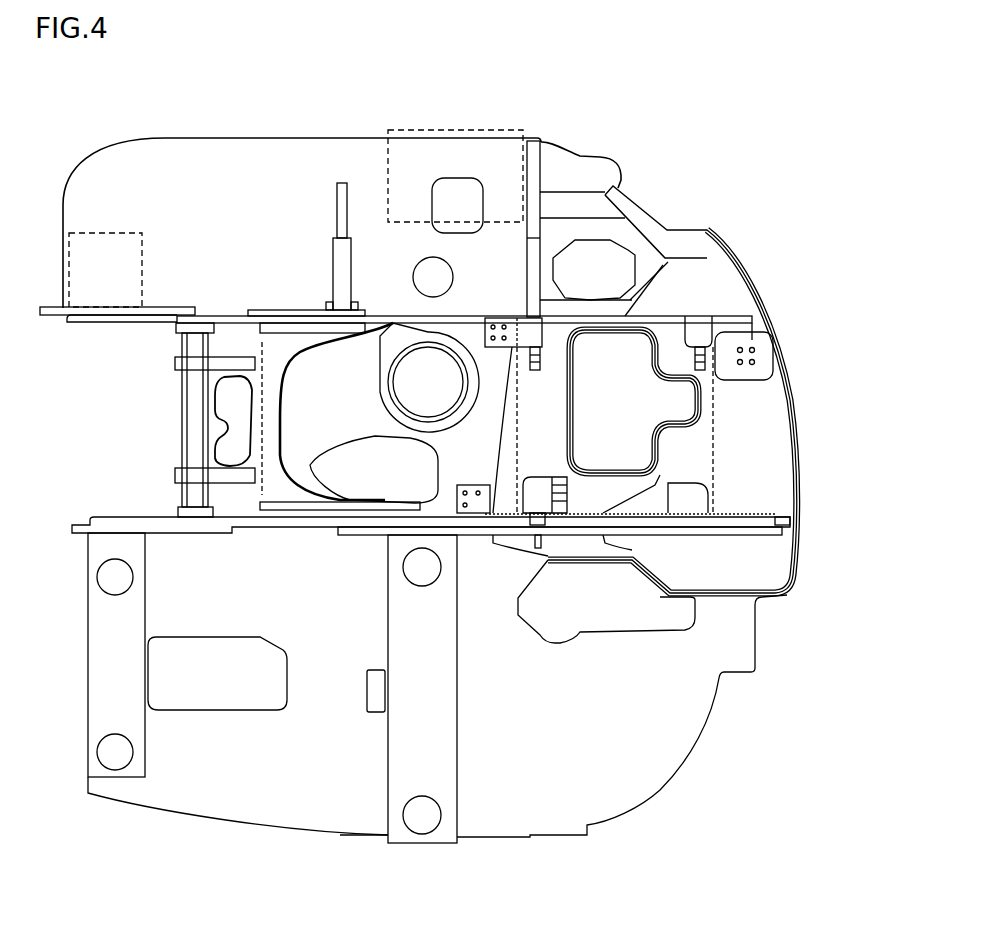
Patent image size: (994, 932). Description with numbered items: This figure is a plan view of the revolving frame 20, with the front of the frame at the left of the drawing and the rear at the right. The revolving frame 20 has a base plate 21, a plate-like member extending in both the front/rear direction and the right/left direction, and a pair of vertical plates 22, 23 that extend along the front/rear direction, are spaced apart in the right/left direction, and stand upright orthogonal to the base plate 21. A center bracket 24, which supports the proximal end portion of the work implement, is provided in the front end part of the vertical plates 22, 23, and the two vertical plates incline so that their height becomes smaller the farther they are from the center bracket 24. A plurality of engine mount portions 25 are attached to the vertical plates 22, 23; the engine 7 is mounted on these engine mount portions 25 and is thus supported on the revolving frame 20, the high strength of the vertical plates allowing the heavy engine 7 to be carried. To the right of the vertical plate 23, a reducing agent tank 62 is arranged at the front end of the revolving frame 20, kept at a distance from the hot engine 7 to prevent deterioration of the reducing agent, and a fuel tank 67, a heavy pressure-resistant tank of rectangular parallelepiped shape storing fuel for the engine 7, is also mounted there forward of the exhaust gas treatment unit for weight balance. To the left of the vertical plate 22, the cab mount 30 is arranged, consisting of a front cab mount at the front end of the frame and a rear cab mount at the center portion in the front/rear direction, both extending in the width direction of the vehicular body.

The revolving frame 20 is at (680, 144).
The reducing agent tank 62 is at (103, 232).
The fuel tank 67 is at (461, 130).
The engine 7 is at (717, 412).
The engine mount portions 25 is at (533, 337).
The base plate 21 is at (193, 400).
The vertical plate 23 is at (240, 320).
The vertical plate 22 is at (243, 520).
The center bracket 24 is at (260, 422).
The cab mount 30 is at (115, 678).